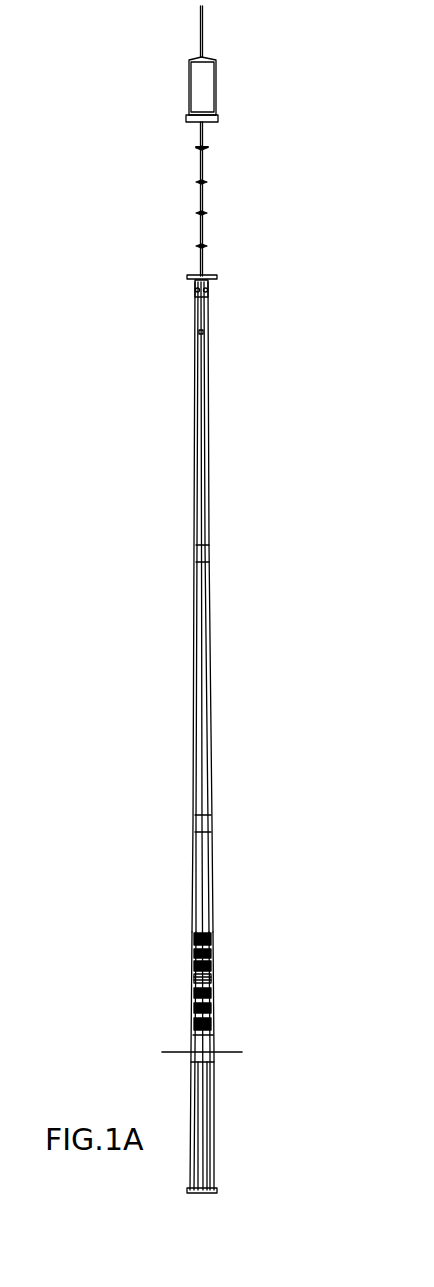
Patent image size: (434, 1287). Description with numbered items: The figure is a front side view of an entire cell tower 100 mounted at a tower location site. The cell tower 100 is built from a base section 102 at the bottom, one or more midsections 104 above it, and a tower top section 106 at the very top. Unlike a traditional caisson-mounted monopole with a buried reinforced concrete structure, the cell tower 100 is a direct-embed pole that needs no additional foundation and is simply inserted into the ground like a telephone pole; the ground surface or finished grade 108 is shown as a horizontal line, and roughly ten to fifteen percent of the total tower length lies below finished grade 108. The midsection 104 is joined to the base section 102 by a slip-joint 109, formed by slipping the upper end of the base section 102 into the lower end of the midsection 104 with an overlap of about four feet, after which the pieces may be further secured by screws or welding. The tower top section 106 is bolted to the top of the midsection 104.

The cell tower 100 is at (143, 655).
The base section 102 is at (213, 914).
The midsection 104 is at (210, 388).
The tower top section 106 is at (204, 197).
The ground surface 108 is at (228, 1051).
The slip-joint 109 is at (196, 556).